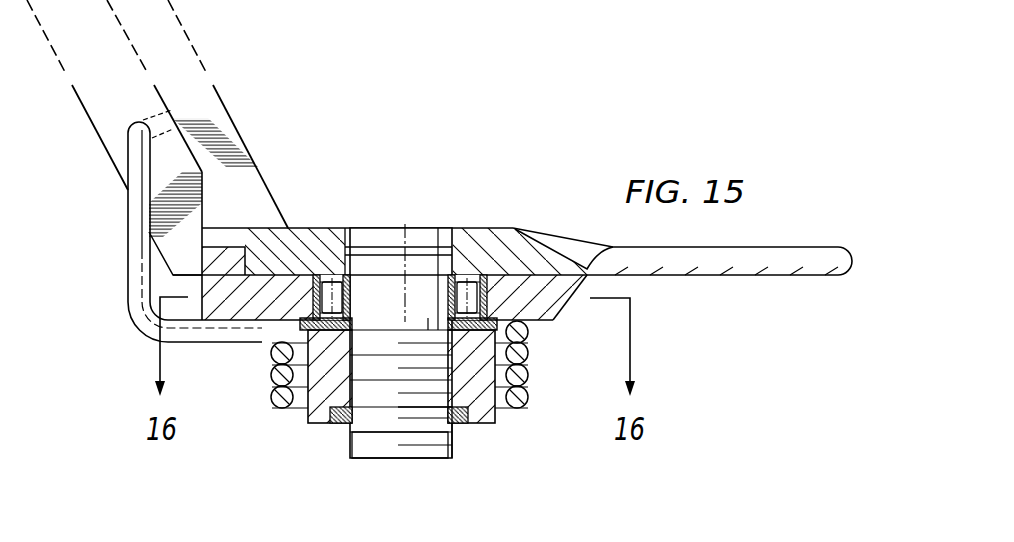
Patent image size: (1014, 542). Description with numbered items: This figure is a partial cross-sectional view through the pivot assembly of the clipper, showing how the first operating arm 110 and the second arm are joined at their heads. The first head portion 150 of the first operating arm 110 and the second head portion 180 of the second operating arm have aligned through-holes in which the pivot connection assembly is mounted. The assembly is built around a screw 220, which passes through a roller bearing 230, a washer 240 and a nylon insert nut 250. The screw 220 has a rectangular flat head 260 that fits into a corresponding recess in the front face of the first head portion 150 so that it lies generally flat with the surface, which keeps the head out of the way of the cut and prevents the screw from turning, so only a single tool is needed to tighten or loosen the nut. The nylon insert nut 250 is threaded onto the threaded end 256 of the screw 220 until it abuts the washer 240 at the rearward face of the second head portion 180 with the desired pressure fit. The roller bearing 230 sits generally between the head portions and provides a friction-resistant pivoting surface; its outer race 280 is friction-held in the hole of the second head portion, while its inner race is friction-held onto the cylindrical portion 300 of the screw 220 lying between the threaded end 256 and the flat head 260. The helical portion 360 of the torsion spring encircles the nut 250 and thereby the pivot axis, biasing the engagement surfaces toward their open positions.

The first operating arm 110 is at (240, 117).
The first head portion 150 is at (472, 228).
The second head portion 180 is at (544, 322).
The screw 220 is at (447, 445).
The roller bearing 230 is at (486, 262).
The washer 240 is at (300, 325).
The nylon insert nut 250 is at (478, 407).
The threaded end 256 is at (370, 445).
The flat head 260 is at (400, 228).
The outer race 280 is at (312, 292).
The cylindrical portion 300 is at (367, 298).
The helical portion 360 is at (270, 378).